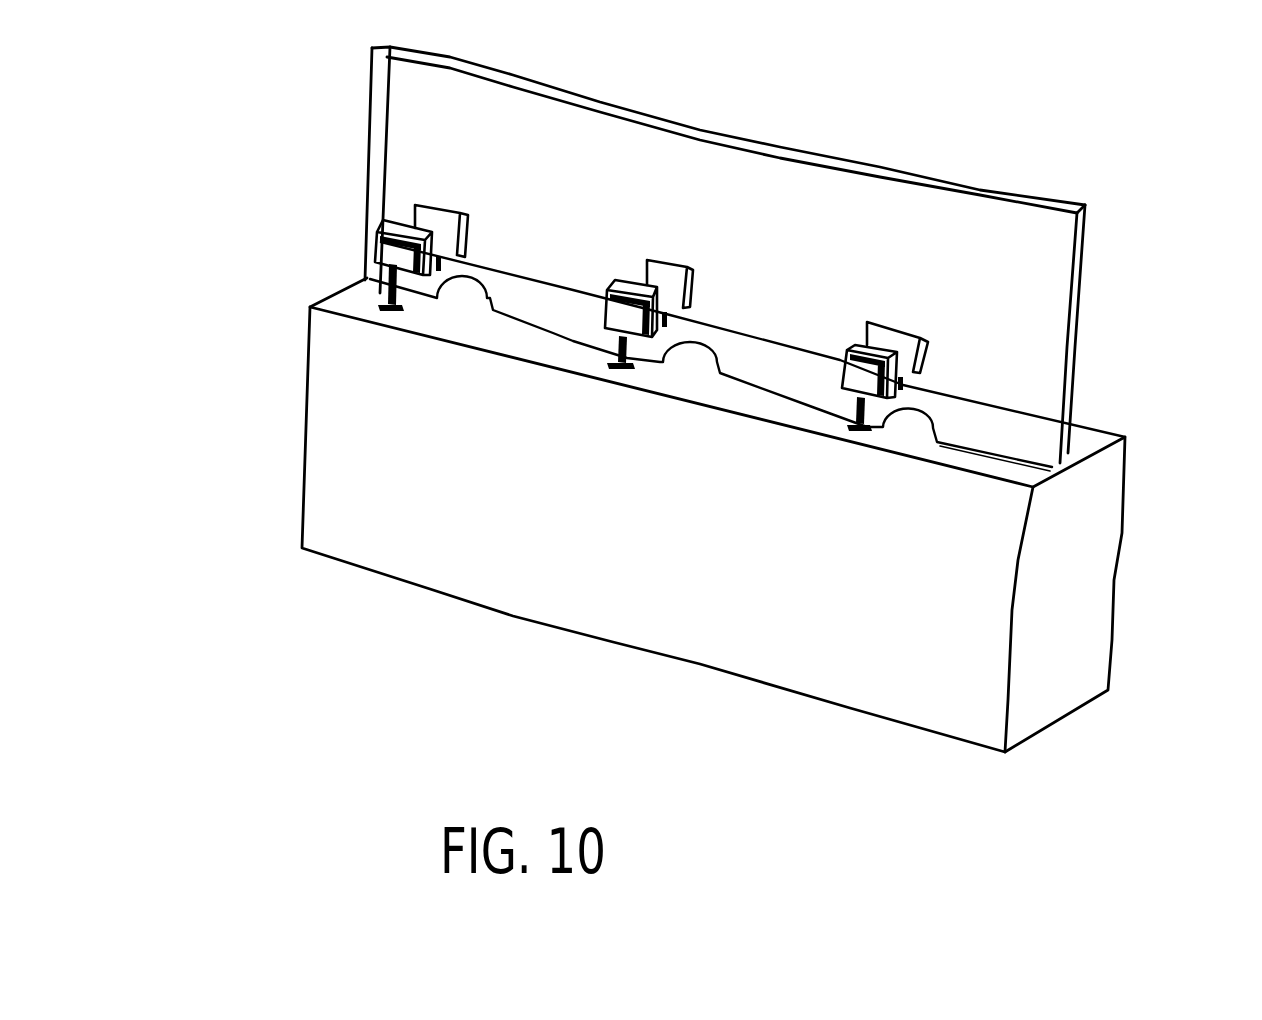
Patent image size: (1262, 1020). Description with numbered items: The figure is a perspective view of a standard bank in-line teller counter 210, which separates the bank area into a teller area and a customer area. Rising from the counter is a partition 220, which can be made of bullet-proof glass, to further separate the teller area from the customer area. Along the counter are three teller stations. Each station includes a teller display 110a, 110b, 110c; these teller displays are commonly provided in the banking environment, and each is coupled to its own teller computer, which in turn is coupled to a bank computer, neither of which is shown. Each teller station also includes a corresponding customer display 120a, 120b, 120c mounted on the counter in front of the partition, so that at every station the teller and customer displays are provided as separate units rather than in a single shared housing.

The first speaker unit 110a is at (430, 207).
The second speaker unit 110b is at (681, 266).
The third speaker unit 110c is at (920, 338).
The first display device 120a is at (372, 249).
The second display device 120b is at (603, 303).
The third display device 120c is at (842, 366).
The back wall panel 220 is at (1073, 362).
The base cabinet 210 is at (1113, 488).